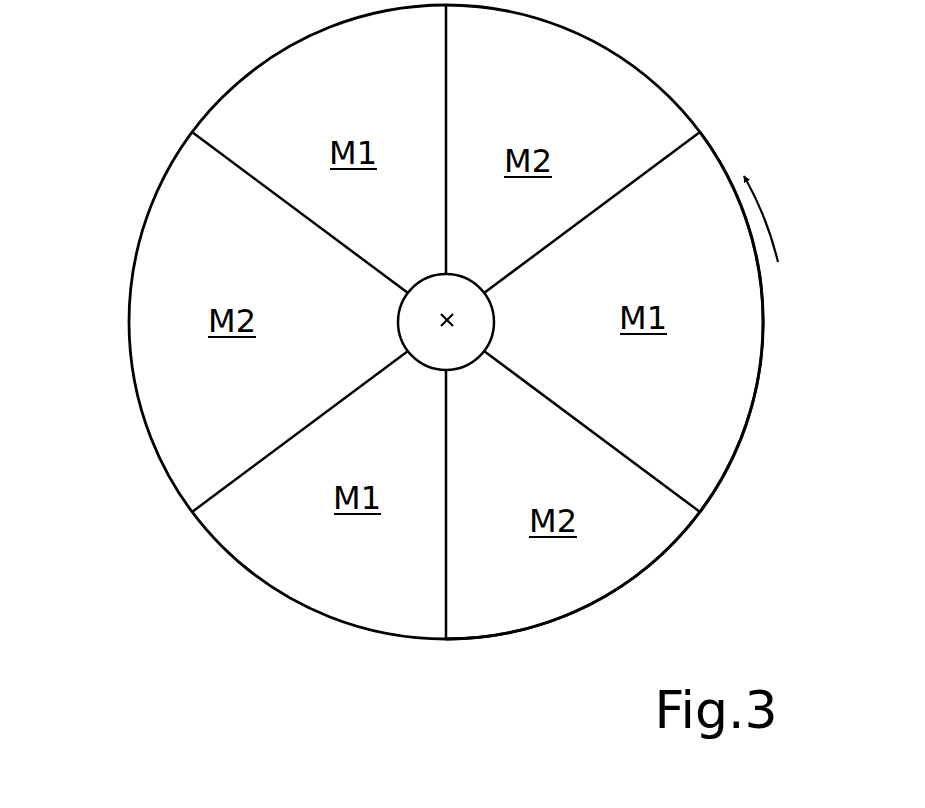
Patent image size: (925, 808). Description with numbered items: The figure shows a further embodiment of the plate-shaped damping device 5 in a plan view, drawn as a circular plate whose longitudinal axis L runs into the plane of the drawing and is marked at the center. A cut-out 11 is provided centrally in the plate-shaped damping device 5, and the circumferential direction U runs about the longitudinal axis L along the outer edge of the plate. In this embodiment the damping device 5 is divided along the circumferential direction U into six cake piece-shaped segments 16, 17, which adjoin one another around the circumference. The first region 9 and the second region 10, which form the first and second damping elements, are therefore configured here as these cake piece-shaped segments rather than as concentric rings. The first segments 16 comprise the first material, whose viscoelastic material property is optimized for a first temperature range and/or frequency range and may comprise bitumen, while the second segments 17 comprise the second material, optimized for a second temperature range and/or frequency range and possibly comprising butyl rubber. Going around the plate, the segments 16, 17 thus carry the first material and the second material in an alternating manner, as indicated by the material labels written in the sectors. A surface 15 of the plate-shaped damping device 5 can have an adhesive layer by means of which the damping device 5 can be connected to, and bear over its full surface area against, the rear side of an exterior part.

The damping device 5 is at (755, 113).
The circumferential direction U is at (767, 210).
The longitudinal axis L is at (451, 320).
The first region 9 is at (730, 398).
The second region 10 is at (543, 598).
The cut-out 11 is at (437, 331).
The surface 15 is at (177, 406).
The first segments 16 is at (675, 383).
The second segments 17 is at (527, 449).